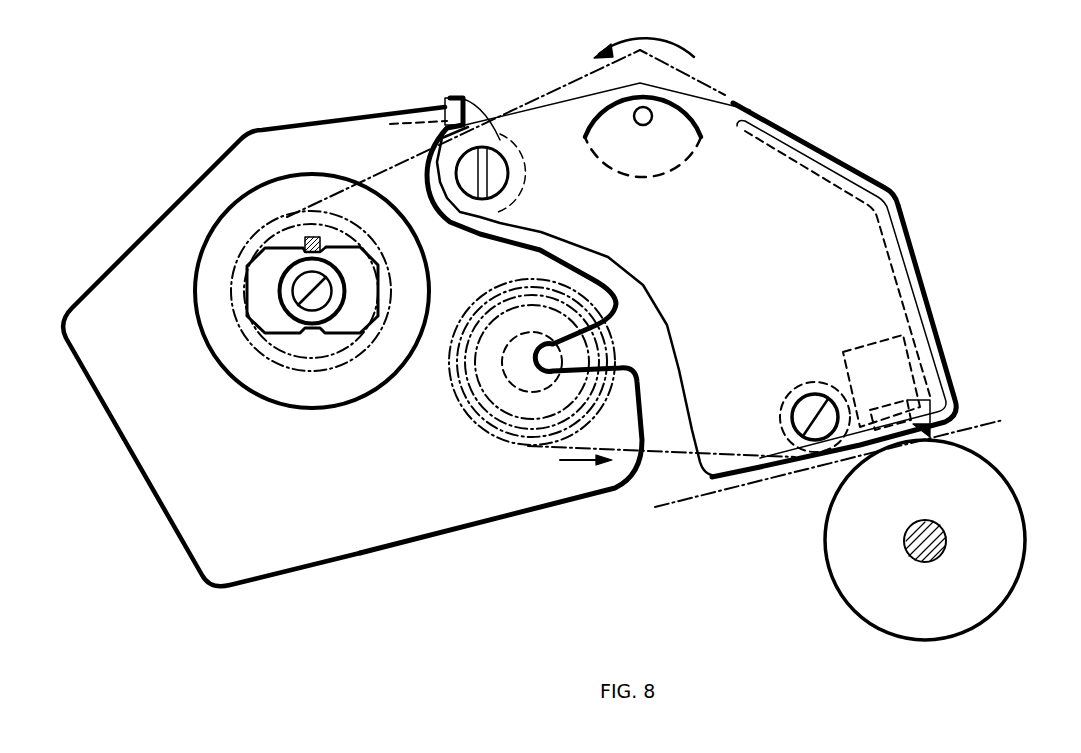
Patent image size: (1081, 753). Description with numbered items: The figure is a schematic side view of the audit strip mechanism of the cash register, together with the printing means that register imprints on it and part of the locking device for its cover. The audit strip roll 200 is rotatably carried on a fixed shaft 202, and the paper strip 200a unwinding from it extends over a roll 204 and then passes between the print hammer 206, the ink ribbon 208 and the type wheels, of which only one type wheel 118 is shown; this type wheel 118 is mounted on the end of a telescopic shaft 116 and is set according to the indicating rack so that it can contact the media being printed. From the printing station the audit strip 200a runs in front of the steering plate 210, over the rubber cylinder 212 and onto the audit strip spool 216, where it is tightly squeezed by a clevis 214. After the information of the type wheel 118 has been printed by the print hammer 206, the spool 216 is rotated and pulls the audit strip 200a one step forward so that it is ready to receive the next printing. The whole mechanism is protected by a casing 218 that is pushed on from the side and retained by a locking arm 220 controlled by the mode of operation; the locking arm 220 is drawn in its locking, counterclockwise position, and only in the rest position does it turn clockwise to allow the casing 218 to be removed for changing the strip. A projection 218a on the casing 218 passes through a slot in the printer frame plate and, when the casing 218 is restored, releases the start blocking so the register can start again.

The telescopic shaft 116 is at (919, 562).
The type wheel 118 is at (960, 600).
The audit strip roll 200 is at (530, 432).
The paper strip 200a is at (658, 452).
The fixed shaft 202 is at (503, 355).
The roll 204 is at (809, 441).
The print hammer 206 is at (920, 405).
The ink ribbon 208 is at (967, 427).
The steering plate 210 is at (913, 283).
The rubber cylinder 212 is at (677, 85).
The clevis 214 is at (310, 240).
The audit strip spool 216 is at (265, 298).
The casing 218 is at (170, 358).
The projection 218a is at (405, 112).
The locking arm 220 is at (452, 97).